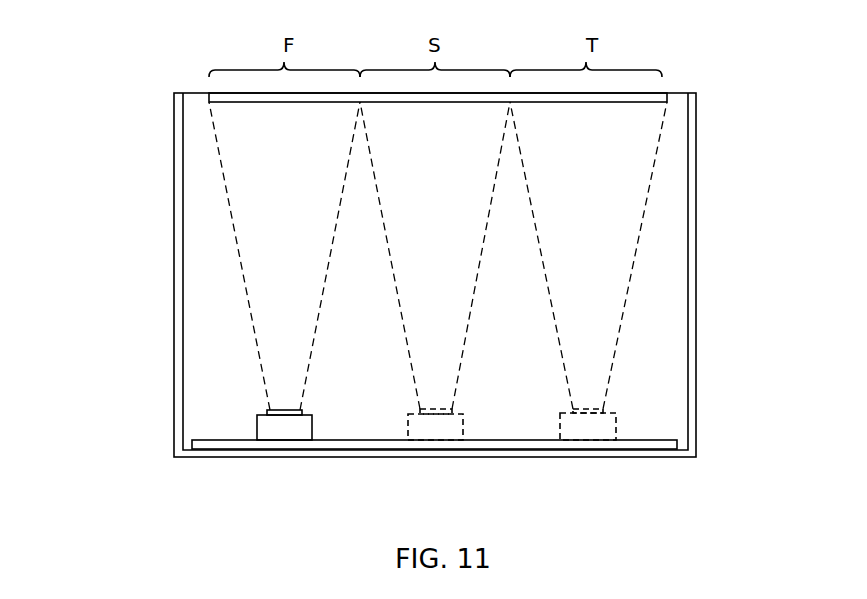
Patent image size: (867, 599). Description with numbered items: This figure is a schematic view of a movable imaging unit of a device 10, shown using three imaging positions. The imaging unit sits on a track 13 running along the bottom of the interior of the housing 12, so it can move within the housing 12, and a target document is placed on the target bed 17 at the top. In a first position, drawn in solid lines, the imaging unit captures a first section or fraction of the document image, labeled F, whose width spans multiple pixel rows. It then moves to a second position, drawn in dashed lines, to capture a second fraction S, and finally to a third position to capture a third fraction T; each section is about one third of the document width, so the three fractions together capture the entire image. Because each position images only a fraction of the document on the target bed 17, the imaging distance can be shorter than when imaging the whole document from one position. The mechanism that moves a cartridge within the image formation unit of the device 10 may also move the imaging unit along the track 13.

The device 10 is at (140, 104).
The housing 12 is at (697, 128).
The track 13 is at (645, 440).
The target bed 17 is at (627, 92).